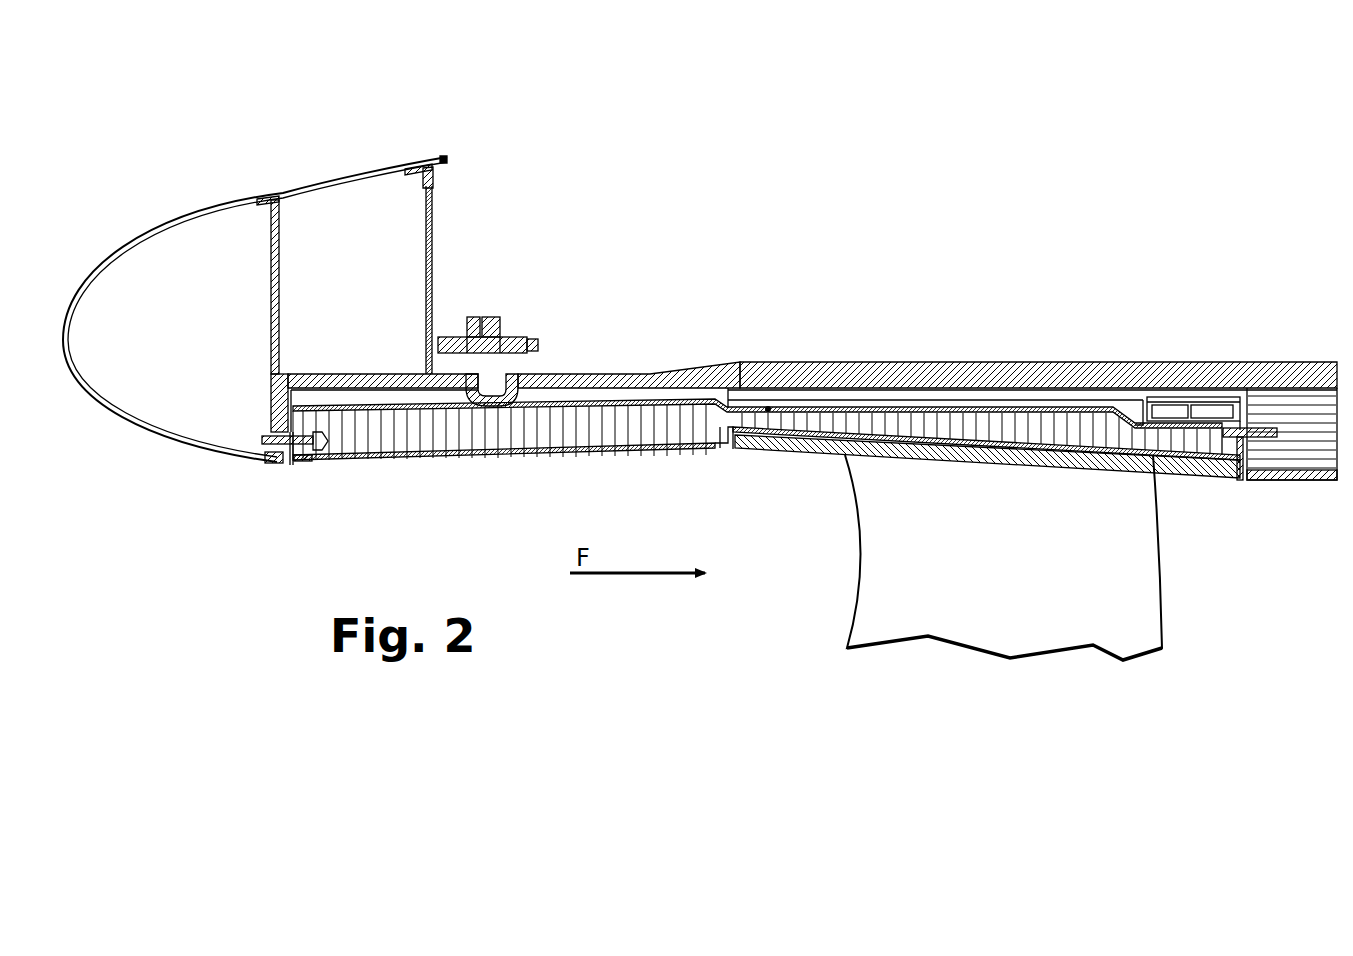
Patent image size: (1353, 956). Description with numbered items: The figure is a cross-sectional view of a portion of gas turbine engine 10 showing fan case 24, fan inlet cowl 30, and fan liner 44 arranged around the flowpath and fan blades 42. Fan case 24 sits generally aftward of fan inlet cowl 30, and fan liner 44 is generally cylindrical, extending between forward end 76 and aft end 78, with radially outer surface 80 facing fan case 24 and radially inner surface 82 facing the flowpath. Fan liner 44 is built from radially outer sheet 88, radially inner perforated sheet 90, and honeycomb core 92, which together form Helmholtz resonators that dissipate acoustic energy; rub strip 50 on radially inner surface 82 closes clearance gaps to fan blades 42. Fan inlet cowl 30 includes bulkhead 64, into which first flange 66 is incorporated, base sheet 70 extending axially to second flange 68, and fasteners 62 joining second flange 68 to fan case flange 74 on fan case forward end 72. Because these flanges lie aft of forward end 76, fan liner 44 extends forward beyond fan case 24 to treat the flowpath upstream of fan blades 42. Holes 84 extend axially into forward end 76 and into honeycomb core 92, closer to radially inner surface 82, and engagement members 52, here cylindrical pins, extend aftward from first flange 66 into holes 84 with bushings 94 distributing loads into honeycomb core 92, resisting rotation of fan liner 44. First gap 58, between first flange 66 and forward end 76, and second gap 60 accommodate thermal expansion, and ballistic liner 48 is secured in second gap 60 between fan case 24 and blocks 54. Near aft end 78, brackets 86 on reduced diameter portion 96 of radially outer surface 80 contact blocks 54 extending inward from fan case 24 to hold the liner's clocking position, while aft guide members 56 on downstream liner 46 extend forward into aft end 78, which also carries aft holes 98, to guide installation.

The gas turbine engine 10 is at (232, 145).
The fan case 24 is at (842, 361).
The fan inlet cowl 30 is at (238, 481).
The fan blades 42 is at (895, 549).
The fan liner 44 is at (560, 461).
The downstream liner 46 is at (1308, 457).
The ballistic liner 48 is at (907, 393).
The rub strip 50 is at (807, 446).
The engagement members 52 is at (268, 436).
The blocks 54 is at (1196, 398).
The aft guide members 56 is at (1276, 430).
The first gap 58 is at (275, 426).
The second gap 60 is at (596, 386).
The fasteners 62 is at (537, 338).
The bulkhead 64 is at (274, 278).
The first flange 66 is at (270, 467).
The second flange 68 is at (470, 317).
The base sheet 70 is at (336, 372).
The fan case forward end 72 is at (540, 370).
The fan case flange 74 is at (488, 317).
The forward end 76 is at (292, 466).
The aft end 78 is at (1238, 465).
The radially outer surface 80 is at (635, 398).
The radially inner surface 82 is at (667, 448).
The holes 84 is at (330, 463).
The brackets 86 is at (1173, 412).
The radially outer sheet 88 is at (768, 405).
The radially inner perforated sheet 90 is at (714, 441).
The honeycomb core 92 is at (645, 430).
The bushings 94 is at (304, 466).
The reduced diameter portion 96 is at (1140, 414).
The aft holes 98 is at (1232, 434).